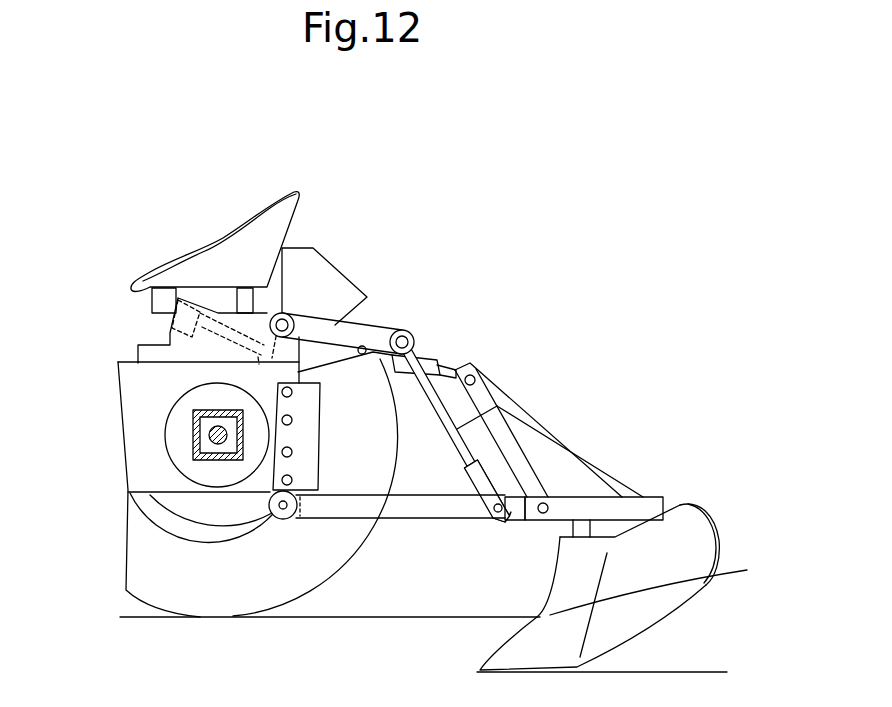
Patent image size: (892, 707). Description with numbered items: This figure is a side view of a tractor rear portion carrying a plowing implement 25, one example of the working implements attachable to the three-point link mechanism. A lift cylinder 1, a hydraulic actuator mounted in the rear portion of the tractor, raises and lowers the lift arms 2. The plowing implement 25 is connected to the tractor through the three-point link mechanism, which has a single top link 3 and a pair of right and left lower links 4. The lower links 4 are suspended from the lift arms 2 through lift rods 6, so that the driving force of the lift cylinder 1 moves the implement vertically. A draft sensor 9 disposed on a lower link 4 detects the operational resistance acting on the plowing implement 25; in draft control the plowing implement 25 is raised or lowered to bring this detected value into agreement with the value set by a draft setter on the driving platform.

The lift cylinder 1 is at (170, 342).
The lift arms 2 is at (382, 328).
The top link 3 is at (433, 355).
The lower links 4 is at (433, 507).
The lift rods 6 is at (497, 406).
The draft sensor 9 is at (285, 522).
The plowing implement 25 is at (652, 482).